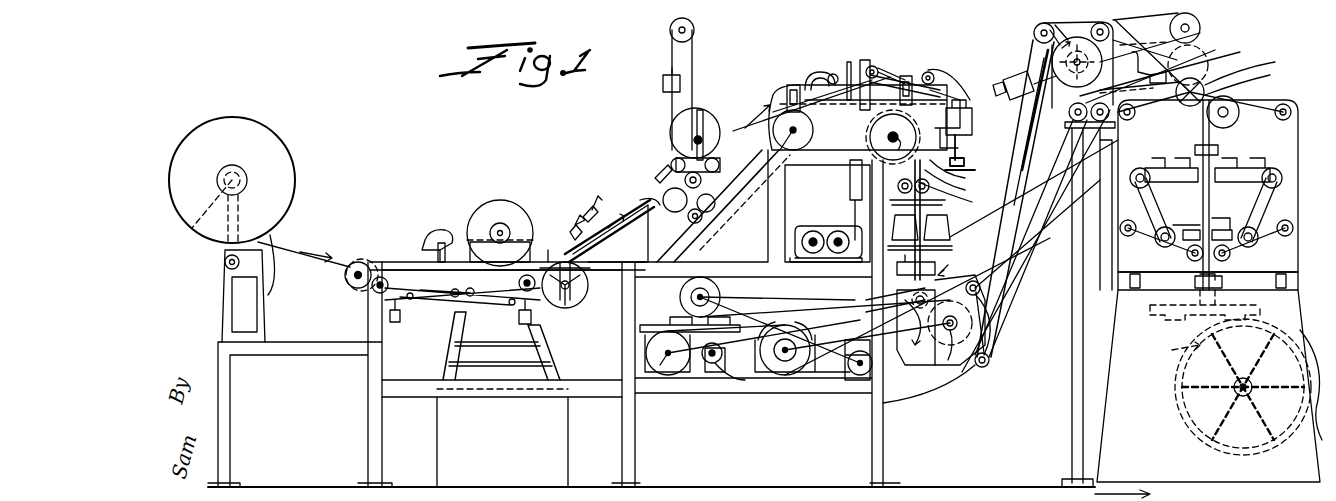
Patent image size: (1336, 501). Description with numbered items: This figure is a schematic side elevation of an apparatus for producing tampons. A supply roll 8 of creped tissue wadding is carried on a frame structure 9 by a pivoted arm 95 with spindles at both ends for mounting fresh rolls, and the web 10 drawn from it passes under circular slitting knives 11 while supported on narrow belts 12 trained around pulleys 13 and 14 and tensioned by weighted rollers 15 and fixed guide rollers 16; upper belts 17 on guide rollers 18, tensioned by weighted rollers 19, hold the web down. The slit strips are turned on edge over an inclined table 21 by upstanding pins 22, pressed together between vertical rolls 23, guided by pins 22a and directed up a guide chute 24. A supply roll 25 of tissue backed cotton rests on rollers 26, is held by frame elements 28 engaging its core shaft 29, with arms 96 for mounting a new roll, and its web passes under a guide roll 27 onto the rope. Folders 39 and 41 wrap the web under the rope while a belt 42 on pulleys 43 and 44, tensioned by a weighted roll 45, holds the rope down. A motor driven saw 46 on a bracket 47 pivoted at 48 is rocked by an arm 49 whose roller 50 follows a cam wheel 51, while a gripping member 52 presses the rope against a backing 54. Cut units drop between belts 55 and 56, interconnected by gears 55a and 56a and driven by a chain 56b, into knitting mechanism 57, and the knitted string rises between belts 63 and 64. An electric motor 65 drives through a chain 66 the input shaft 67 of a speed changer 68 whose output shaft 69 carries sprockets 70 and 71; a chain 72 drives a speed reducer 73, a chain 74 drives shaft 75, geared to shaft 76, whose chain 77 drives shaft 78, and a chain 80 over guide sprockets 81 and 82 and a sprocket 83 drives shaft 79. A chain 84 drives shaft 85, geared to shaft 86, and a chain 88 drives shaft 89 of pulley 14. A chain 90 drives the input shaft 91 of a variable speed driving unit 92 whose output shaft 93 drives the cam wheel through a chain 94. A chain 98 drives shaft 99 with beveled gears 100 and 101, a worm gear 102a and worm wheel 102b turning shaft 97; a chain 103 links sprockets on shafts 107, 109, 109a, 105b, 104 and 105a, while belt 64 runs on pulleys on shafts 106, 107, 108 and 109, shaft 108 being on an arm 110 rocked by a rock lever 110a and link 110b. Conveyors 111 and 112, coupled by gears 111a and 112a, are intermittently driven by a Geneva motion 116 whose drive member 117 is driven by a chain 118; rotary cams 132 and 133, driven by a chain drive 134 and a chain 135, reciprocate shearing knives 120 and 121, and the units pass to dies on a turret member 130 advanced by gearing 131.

The supply roll 8 is at (255, 128).
The frame structure 9 is at (318, 330).
The web 10 is at (282, 255).
The circular slitting knives 11 is at (493, 208).
The narrow belts 12 is at (440, 297).
The supporting pulley 13 is at (345, 278).
The supporting pulley 14 is at (582, 292).
The weighted rollers 15 is at (460, 314).
The fixed guide rollers 16 is at (372, 293).
The narrow belts 17 is at (493, 259).
The guide rollers 18 is at (420, 241).
The weighted tension rollers 19 is at (458, 240).
The inclined table 21 is at (597, 196).
The upstanding pins 22 is at (575, 226).
The guide pins 22a is at (584, 212).
The axially vertical rolls 23 is at (582, 207).
The guide chute 24 is at (722, 222).
The supply roll 25 is at (688, 118).
The rollers 26 is at (675, 158).
The guide roll 27 is at (722, 160).
The frame elements 28 is at (700, 140).
The core shaft 29 is at (694, 138).
The plow-like folding member 39 is at (820, 160).
The folder 41 is at (853, 56).
The belt 42 is at (866, 60).
The pulley 43 is at (790, 84).
The pulley 44 is at (918, 75).
The weighted roll 45 is at (836, 70).
The motor driven circular saw 46 is at (975, 160).
The bracket 47 is at (972, 122).
The pivot shaft 48 is at (950, 84).
The arm 49 is at (958, 102).
The roller 50 is at (897, 126).
The cam wheel 51 is at (951, 169).
The gripping member 52 is at (951, 182).
The backing 54 is at (953, 195).
The belt 55 is at (945, 204).
The gear 55a is at (899, 192).
The belt 56 is at (950, 222).
The gear 56a is at (930, 192).
The chain 56b is at (1034, 188).
The knitting mechanism 57 is at (952, 248).
The belt 63 is at (1028, 122).
The belt 64 is at (1022, 138).
The electric motor 65 is at (720, 296).
The driving chain 66 is at (680, 322).
The input shaft 67 is at (668, 353).
The speed changer 68 is at (692, 378).
The output shaft 69 is at (735, 378).
The sprocket 70 is at (715, 370).
The sprocket 71 is at (710, 380).
The chain 72 is at (782, 378).
The speed reducer 73 is at (785, 325).
The chain 74 is at (810, 378).
The shaft 75 is at (856, 378).
The shaft 76 is at (846, 352).
The chain 77 is at (902, 268).
The shaft 78 is at (893, 137).
The shaft 79 is at (788, 136).
The chain 80 is at (890, 70).
The guide sprocket 81 is at (875, 66).
The guide sprocket 82 is at (934, 76).
The sprocket 83 is at (912, 82).
The chain 84 is at (715, 210).
The shaft 85 is at (700, 222).
The shaft 86 is at (684, 182).
The chain 88 is at (648, 241).
The shaft 89 is at (567, 304).
The chain 90 is at (850, 290).
The input shaft 91 is at (806, 226).
The variable speed driving unit 92 is at (820, 222).
The output shaft 93 is at (842, 228).
The chain 94 is at (850, 196).
The arm 95 is at (199, 209).
The angularly disposed arms 96 is at (656, 170).
The shaft 97 is at (956, 326).
The chain 98 is at (835, 312).
The shaft 99 is at (895, 300).
The beveled gear 100 is at (916, 327).
The beveled gear 101 is at (928, 295).
The worm gear 102a is at (976, 273).
The worm wheel 102b is at (990, 338).
The chain 103 is at (1036, 26).
The shaft 104 is at (1034, 35).
The shaft 105a is at (1000, 322).
The shaft 105b is at (1120, 20).
The shaft 106 is at (987, 368).
The shaft 107 is at (1060, 58).
The shaft 108 is at (1210, 45).
The shaft 109 is at (1071, 148).
The shaft 109a is at (1102, 212).
The arm 110 is at (1208, 14).
The rock lever 110a is at (1168, 75).
The link 110b is at (1164, 65).
The conveyor 111 is at (1196, 148).
The gear 111a is at (1247, 70).
The conveyor 112 is at (1238, 120).
The gear 112a is at (1245, 84).
The Geneva motion 116 is at (1155, 130).
The drive member 117 is at (1205, 85).
The chain 118 is at (1050, 215).
The shearing knife 120 is at (1186, 223).
The shearing knife 121 is at (1240, 222).
The turret member 130 is at (1248, 280).
The gearing 131 is at (1230, 387).
The rotary cam 132 is at (1310, 162).
The rotary cam 133 is at (1155, 248).
The chain drive 134 is at (1160, 162).
The chain 135 is at (1165, 205).